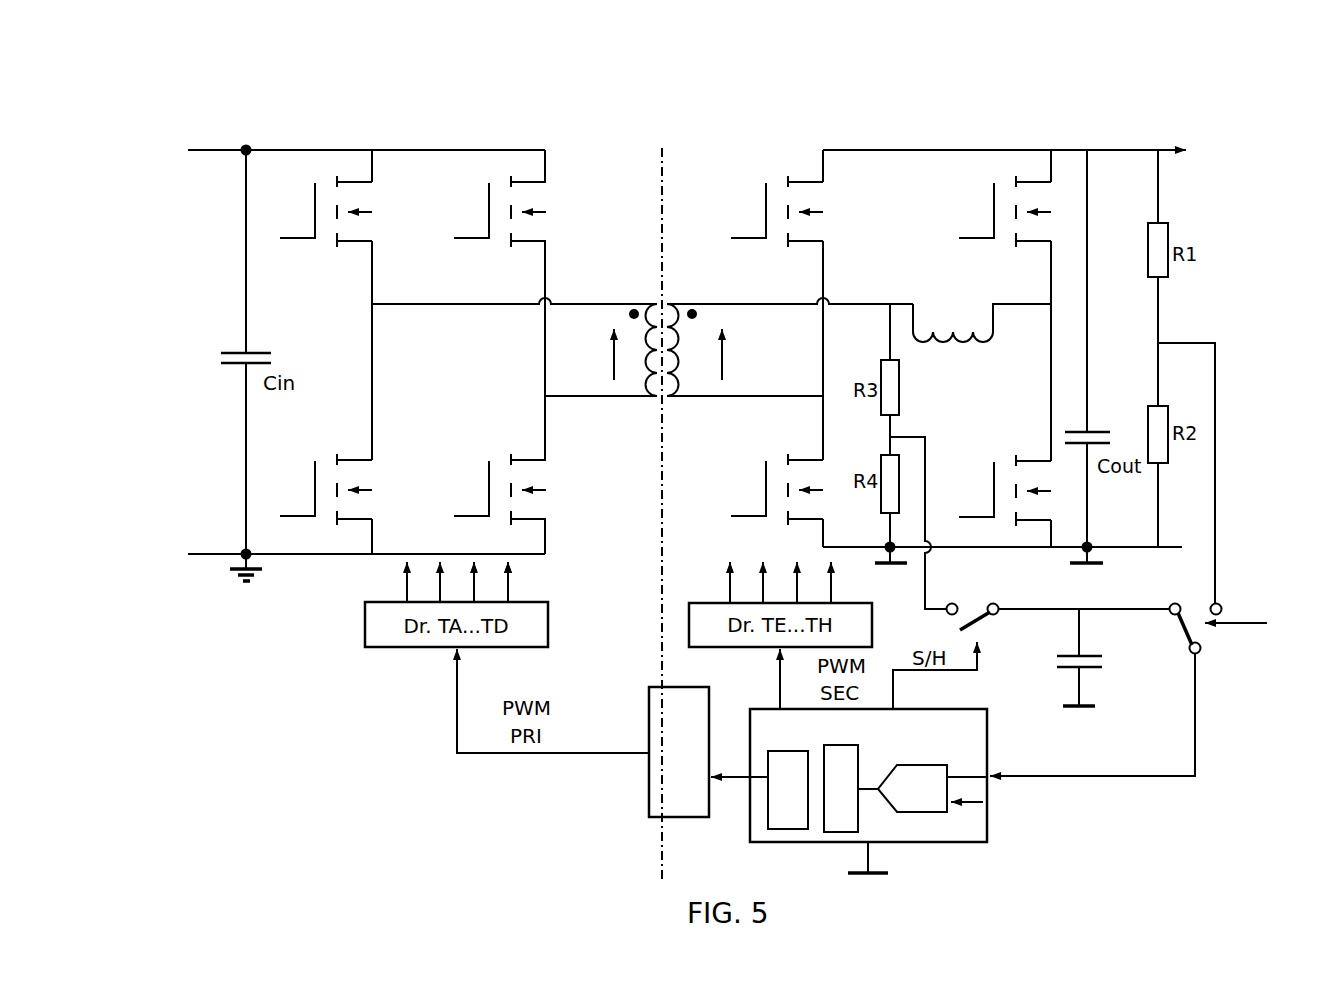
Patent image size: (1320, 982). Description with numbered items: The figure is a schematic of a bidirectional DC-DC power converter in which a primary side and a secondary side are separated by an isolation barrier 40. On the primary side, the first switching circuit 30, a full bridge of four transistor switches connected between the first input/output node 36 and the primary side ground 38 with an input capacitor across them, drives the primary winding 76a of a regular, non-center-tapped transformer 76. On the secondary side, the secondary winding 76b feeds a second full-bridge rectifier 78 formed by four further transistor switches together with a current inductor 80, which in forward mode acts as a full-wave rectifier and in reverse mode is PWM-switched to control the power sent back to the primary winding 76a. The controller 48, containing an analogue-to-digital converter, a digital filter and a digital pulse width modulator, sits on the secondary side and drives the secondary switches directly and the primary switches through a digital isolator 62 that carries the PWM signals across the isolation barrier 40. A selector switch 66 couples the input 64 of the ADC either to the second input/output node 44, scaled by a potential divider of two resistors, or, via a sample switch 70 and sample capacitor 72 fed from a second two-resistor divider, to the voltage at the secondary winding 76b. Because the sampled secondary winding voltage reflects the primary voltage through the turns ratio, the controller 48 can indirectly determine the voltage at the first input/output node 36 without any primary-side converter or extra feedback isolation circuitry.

The first input/output node 36 is at (188, 150).
The primary side ground 38 is at (188, 554).
The first switching circuit 30 is at (412, 142).
The isolation barrier 40 is at (662, 150).
The transformer 76 is at (636, 280).
The primary winding 76a is at (646, 397).
The secondary winding 76b is at (682, 397).
The second full-bridge rectifier 78 is at (913, 142).
The second input/output node 44 is at (1182, 149).
The current inductor 80 is at (948, 317).
The sample switch 70 is at (971, 603).
The sample capacitor 72 is at (1090, 639).
The selector switch 66 is at (1193, 603).
The input of the ADC 64 is at (1196, 757).
The digital isolator 62 is at (693, 818).
The controller 48 is at (987, 832).